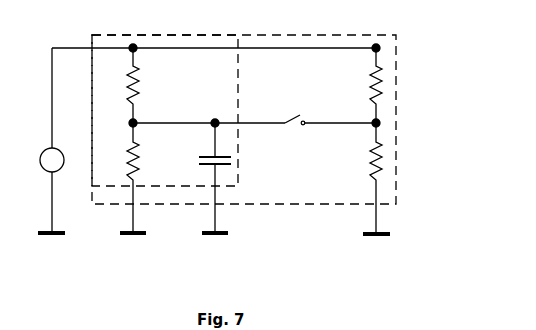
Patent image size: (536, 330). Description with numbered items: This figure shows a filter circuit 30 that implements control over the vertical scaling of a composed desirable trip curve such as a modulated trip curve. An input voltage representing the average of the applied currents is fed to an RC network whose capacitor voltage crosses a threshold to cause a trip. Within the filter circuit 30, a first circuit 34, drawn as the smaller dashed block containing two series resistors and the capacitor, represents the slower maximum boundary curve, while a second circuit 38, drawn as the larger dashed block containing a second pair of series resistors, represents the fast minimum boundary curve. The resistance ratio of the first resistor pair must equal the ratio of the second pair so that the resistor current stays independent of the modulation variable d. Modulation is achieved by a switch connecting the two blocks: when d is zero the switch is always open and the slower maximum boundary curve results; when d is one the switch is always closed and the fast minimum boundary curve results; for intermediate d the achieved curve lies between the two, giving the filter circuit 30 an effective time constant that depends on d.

The filter circuit 30 is at (110, 252).
The first circuit 34 is at (114, 190).
The second circuit 38 is at (289, 207).